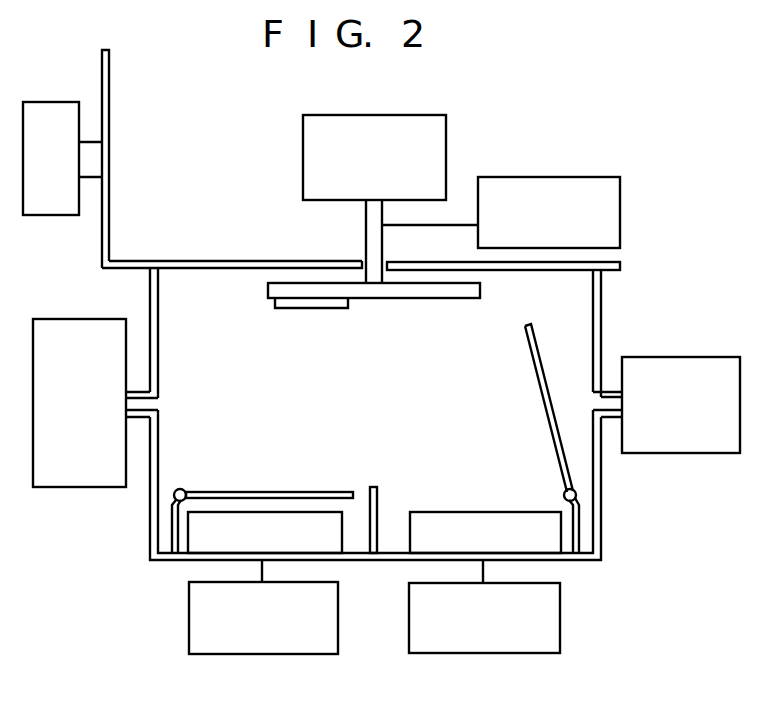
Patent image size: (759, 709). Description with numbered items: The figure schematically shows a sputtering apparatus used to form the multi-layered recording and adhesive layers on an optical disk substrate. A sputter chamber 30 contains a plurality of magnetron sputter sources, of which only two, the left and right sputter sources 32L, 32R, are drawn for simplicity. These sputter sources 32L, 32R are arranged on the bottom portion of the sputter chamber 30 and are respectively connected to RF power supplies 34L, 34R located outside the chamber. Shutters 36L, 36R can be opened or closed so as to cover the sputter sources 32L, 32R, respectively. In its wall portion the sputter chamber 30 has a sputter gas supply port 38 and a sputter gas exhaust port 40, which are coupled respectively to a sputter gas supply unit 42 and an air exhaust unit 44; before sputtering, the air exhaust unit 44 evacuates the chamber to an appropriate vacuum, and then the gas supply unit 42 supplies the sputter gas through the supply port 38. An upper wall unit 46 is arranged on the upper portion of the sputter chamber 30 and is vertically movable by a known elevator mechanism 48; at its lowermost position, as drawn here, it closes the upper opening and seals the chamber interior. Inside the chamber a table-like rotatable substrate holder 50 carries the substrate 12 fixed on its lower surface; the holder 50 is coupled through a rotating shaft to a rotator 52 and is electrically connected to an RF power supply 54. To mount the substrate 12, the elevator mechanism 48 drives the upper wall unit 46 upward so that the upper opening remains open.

The substrate 12 is at (300, 309).
The sputter chamber 30 is at (601, 290).
The left sputter source 32L is at (312, 511).
The right sputter source 32R is at (473, 511).
The left RF power supply 34L is at (286, 655).
The right RF power supply 34R is at (516, 654).
The left shutter 36L is at (243, 490).
The right shutter 36R is at (542, 385).
The sputter gas supply port 38 is at (145, 392).
The sputter gas exhaust port 40 is at (606, 390).
The sputter gas supply unit 42 is at (92, 488).
The air exhaust unit 44 is at (716, 357).
The upper wall unit 46 is at (102, 254).
The elevator mechanism 48 is at (58, 100).
The substrate holder 50 is at (268, 287).
The rotator 52 is at (446, 118).
The RF power supply 54 is at (591, 177).